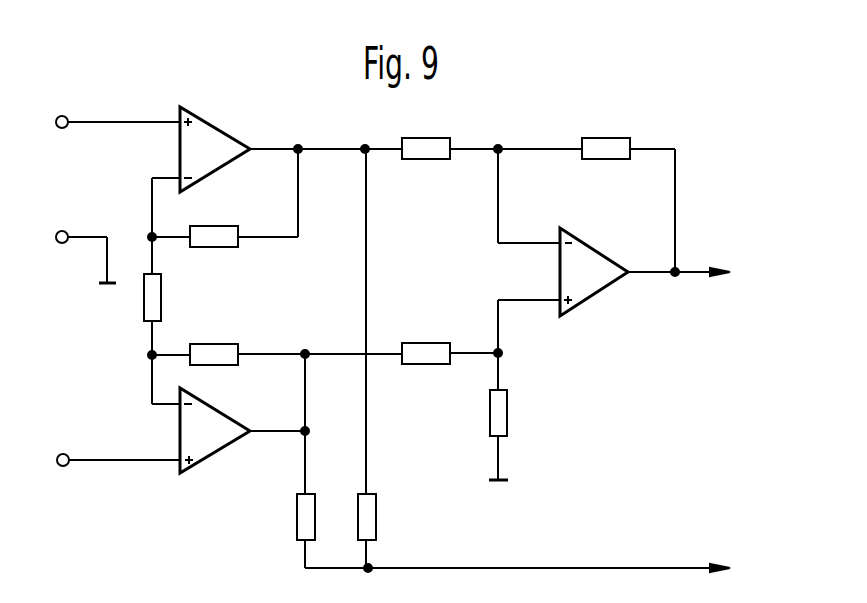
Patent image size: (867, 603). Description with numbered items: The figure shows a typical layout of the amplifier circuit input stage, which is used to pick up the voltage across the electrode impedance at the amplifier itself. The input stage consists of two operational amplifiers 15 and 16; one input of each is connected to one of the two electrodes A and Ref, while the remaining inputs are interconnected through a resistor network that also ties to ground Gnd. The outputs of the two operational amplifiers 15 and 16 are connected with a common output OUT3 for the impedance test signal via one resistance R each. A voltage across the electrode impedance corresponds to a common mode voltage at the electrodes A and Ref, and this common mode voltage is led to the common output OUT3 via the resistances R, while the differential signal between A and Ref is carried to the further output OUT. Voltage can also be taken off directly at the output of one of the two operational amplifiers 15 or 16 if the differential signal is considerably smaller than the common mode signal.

The operational amplifier 15 is at (211, 122).
The operational amplifier 16 is at (208, 461).
The resistance R is at (347, 517).
The electrode A is at (104, 123).
The ground Gnd is at (62, 253).
The electrode Ref is at (98, 461).
The output OUT is at (705, 271).
The common output OUT3 is at (550, 567).